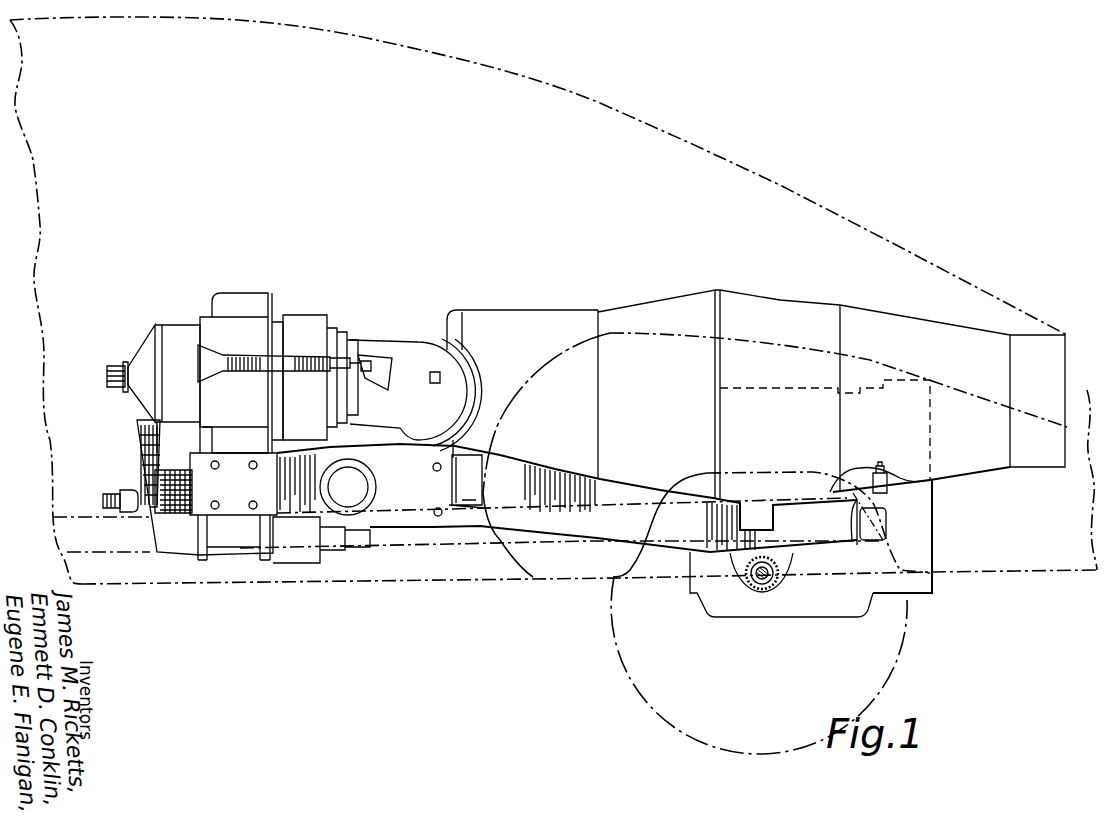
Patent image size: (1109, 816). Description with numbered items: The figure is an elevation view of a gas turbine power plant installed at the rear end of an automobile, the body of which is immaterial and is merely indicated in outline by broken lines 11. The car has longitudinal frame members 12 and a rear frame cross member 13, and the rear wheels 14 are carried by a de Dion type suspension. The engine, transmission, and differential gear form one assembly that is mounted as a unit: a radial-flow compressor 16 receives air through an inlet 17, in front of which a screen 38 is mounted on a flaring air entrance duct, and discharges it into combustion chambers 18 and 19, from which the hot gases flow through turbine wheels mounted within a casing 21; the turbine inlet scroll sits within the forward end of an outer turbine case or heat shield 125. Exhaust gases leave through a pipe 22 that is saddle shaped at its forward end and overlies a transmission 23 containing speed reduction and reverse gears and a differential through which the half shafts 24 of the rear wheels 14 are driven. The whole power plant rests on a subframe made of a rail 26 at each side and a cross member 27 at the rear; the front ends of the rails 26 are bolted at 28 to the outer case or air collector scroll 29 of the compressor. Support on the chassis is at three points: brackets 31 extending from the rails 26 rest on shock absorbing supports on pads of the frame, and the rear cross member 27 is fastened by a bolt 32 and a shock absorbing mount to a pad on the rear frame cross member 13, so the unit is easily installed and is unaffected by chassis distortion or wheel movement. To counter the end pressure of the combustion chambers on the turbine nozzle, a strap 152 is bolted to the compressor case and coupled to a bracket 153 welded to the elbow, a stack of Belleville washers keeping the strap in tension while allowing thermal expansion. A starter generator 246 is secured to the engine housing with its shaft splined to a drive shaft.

The broken lines 11 is at (533, 82).
The longitudinal frame members 12 is at (120, 505).
The rear frame cross member 13 is at (870, 542).
The rear wheels 14 is at (885, 670).
The radial-flow compressor 16 is at (250, 303).
The inlet 17 is at (136, 432).
The combustion chamber 18 is at (190, 330).
The combustion chamber 19 is at (170, 556).
The casing 21 is at (580, 311).
The exhaust pipe 22 is at (780, 302).
The transmission 23 is at (860, 388).
The half shafts 24 is at (762, 590).
The rails 26 is at (437, 470).
The cross member 27 is at (880, 497).
The bolts 28 is at (217, 509).
The outer case or air collector scroll 29 is at (247, 448).
The brackets 31 is at (470, 483).
The bolt 32 is at (883, 470).
The screen 38 is at (175, 440).
The outer turbine case or heat shield 125 is at (520, 310).
The strap 152 is at (307, 358).
The bracket 153 is at (372, 356).
The generator 246 is at (350, 487).